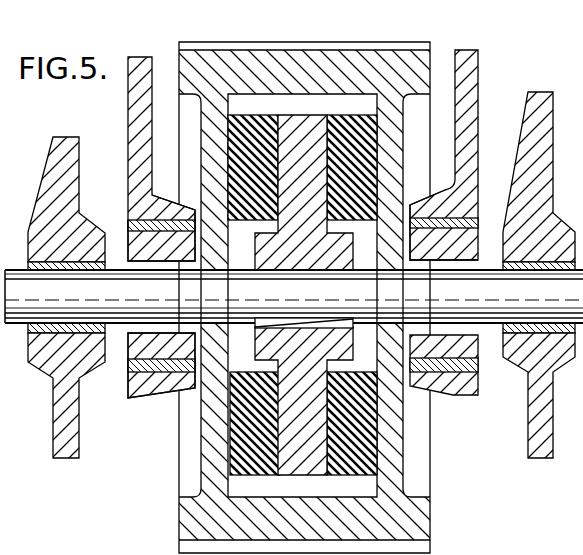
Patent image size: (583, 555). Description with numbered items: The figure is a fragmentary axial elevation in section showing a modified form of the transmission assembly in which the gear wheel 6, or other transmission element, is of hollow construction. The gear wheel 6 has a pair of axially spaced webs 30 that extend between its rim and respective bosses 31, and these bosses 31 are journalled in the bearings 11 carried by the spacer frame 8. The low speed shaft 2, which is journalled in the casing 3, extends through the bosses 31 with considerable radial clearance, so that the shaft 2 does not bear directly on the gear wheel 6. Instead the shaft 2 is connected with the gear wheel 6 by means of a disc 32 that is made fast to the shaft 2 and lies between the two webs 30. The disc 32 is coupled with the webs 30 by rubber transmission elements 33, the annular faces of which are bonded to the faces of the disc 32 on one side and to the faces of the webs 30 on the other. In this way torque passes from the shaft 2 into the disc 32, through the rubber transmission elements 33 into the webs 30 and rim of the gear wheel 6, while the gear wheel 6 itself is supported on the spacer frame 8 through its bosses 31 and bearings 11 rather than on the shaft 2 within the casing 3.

The low speed shaft 2 is at (497, 300).
The casing 3 is at (72, 432).
The gear wheel 6 is at (378, 67).
The spacer frame 8 is at (470, 80).
The bearings 11 is at (133, 228).
The webs 30 is at (208, 140).
The bosses 31 is at (140, 343).
The disc 32 is at (302, 130).
The rubber transmission elements 33 is at (248, 125).